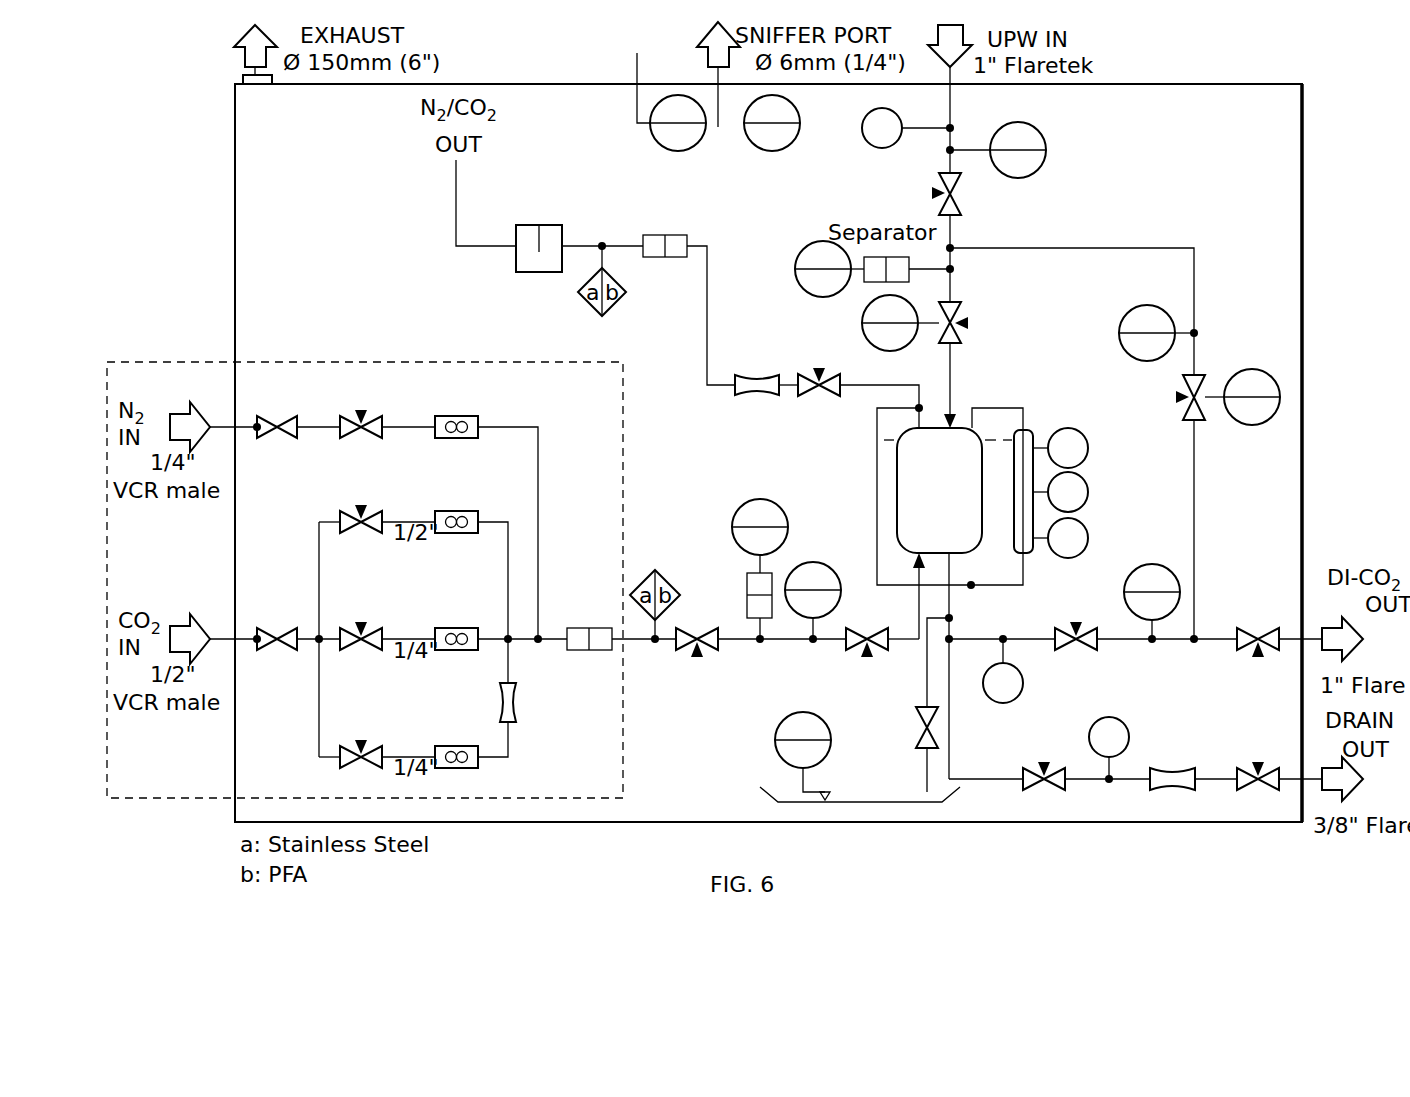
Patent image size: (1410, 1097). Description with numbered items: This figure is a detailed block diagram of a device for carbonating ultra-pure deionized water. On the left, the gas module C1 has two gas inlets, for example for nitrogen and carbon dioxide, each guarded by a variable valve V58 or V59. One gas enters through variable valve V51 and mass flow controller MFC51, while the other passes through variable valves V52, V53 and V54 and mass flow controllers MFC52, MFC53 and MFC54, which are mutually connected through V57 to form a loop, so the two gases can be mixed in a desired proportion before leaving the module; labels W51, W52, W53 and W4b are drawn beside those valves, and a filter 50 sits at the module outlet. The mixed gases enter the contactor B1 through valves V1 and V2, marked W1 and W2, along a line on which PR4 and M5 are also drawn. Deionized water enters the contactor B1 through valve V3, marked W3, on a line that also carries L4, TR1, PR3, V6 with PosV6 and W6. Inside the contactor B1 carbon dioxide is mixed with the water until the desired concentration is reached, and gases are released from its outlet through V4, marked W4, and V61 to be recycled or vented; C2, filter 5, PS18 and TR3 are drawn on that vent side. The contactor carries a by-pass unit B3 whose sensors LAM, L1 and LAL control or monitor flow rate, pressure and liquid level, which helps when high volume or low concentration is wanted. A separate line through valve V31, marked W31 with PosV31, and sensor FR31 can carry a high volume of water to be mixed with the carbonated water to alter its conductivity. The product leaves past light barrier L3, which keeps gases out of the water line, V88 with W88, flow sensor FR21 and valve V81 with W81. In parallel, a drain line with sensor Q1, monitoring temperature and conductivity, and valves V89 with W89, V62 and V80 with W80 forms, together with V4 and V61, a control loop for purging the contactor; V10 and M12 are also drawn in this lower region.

The gas module C1 is at (365, 580).
The condenser/vent unit C2 is at (539, 235).
The filter 5 is at (657, 259).
The filter 50 is at (571, 652).
The valve V61 is at (757, 395).
The valve V4 is at (819, 394).
The valve actuator W4 is at (819, 370).
The valve actuator W4b is at (361, 742).
The pressure switch PS18 is at (678, 123).
The temperature sensor TR3 is at (772, 123).
The temperature sensor TR1 is at (1018, 150).
The level sensor L4 is at (882, 128).
The valve V3 is at (965, 194).
The valve actuator W3 is at (934, 193).
The pressure sensor PR3 is at (823, 269).
The valve position indicator PosV6 is at (890, 323).
The valve V6 is at (934, 311).
The valve actuator W6 is at (966, 323).
The sensor FR31 is at (1147, 333).
The valve V31 is at (1213, 385).
The valve actuator W31 is at (1178, 397).
The valve position indicator PosV31 is at (1252, 397).
The contactor B1 is at (940, 490).
The by-pass unit B3 is at (1008, 491).
The level alarm max LAM is at (1060, 448).
The sensor L1 is at (1060, 492).
The sensor LAL is at (1060, 538).
The valve V10 is at (905, 727).
The sensor M12 is at (803, 740).
The valve V1 is at (697, 624).
The valve actuator W1 is at (697, 655).
The pressure sensor PR4 is at (760, 527).
The sensor M5 is at (813, 590).
The valve V2 is at (867, 624).
The valve actuator W2 is at (867, 655).
The light barrier L3 is at (1003, 669).
The valve V88 is at (1076, 651).
The valve actuator W88 is at (1076, 624).
The sensor FR21 is at (1152, 592).
The valve V81 is at (1265, 624).
The valve actuator W81 is at (1258, 655).
The valve V89 is at (1044, 791).
The valve actuator W89 is at (1044, 764).
The sensor Q1 is at (1109, 750).
The valve V62 is at (1172, 791).
The valve V80 is at (1258, 791).
The valve actuator W80 is at (1258, 764).
The variable valve V58 is at (276, 443).
The variable valve V51 is at (360, 443).
The valve actuator W51 is at (361, 412).
The mass flow controller MFC51 is at (450, 413).
The variable valve V52 is at (360, 538).
The valve actuator W52 is at (361, 507).
The mass flow controller MFC52 is at (450, 508).
The variable valve V59 is at (276, 654).
The variable valve V53 is at (360, 654).
The valve actuator W53 is at (361, 624).
The mass flow controller MFC53 is at (450, 625).
The valve V57 is at (531, 702).
The variable valve V54 is at (360, 771).
The mass flow controller MFC54 is at (450, 744).